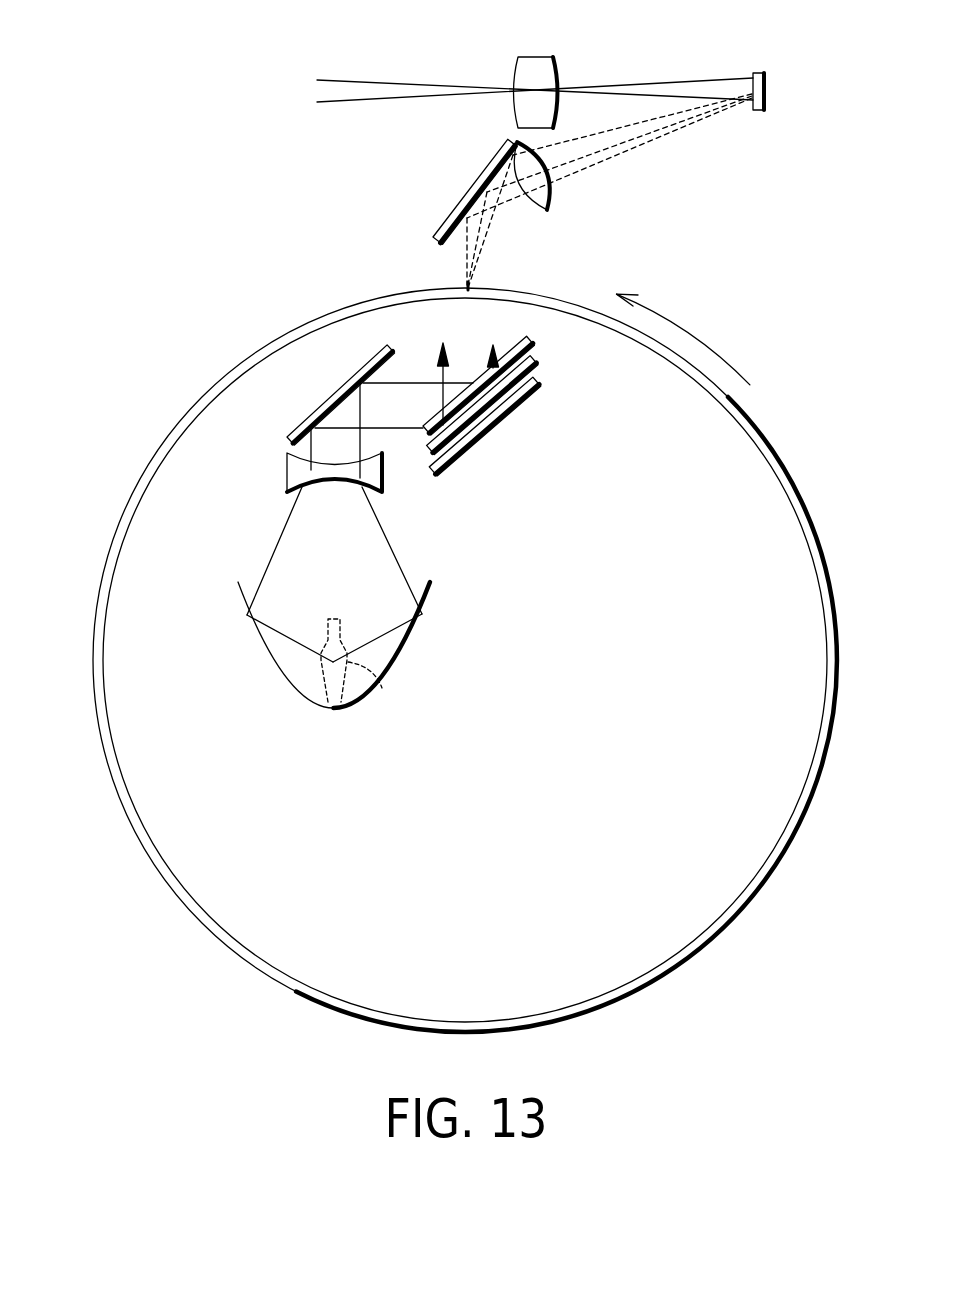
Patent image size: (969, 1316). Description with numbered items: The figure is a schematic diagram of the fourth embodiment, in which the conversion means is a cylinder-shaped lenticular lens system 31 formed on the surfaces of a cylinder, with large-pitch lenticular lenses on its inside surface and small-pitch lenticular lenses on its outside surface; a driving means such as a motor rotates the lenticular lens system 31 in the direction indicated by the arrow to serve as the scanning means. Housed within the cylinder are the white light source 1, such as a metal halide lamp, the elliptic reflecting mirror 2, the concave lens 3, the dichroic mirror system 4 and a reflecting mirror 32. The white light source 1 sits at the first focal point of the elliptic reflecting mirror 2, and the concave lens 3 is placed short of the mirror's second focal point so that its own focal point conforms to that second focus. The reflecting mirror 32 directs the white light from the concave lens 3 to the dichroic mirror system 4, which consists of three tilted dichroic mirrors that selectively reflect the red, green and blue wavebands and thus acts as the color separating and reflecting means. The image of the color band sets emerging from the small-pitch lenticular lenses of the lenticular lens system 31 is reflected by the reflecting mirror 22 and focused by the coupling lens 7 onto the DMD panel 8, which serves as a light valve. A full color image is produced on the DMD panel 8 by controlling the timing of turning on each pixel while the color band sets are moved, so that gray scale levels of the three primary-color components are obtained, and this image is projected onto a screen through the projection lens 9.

The white light source 1 is at (383, 690).
The elliptic reflecting mirror 2 is at (296, 694).
The concave lens 3 is at (384, 475).
The dichroic mirror system 4 is at (548, 357).
The coupling lens 7 is at (550, 197).
The DMD panel 8 is at (767, 92).
The projection lens 9 is at (533, 57).
The reflecting mirror 22 is at (472, 183).
The cylinder-shaped lenticular lens system 31 is at (236, 369).
The reflecting mirror 32 is at (330, 397).